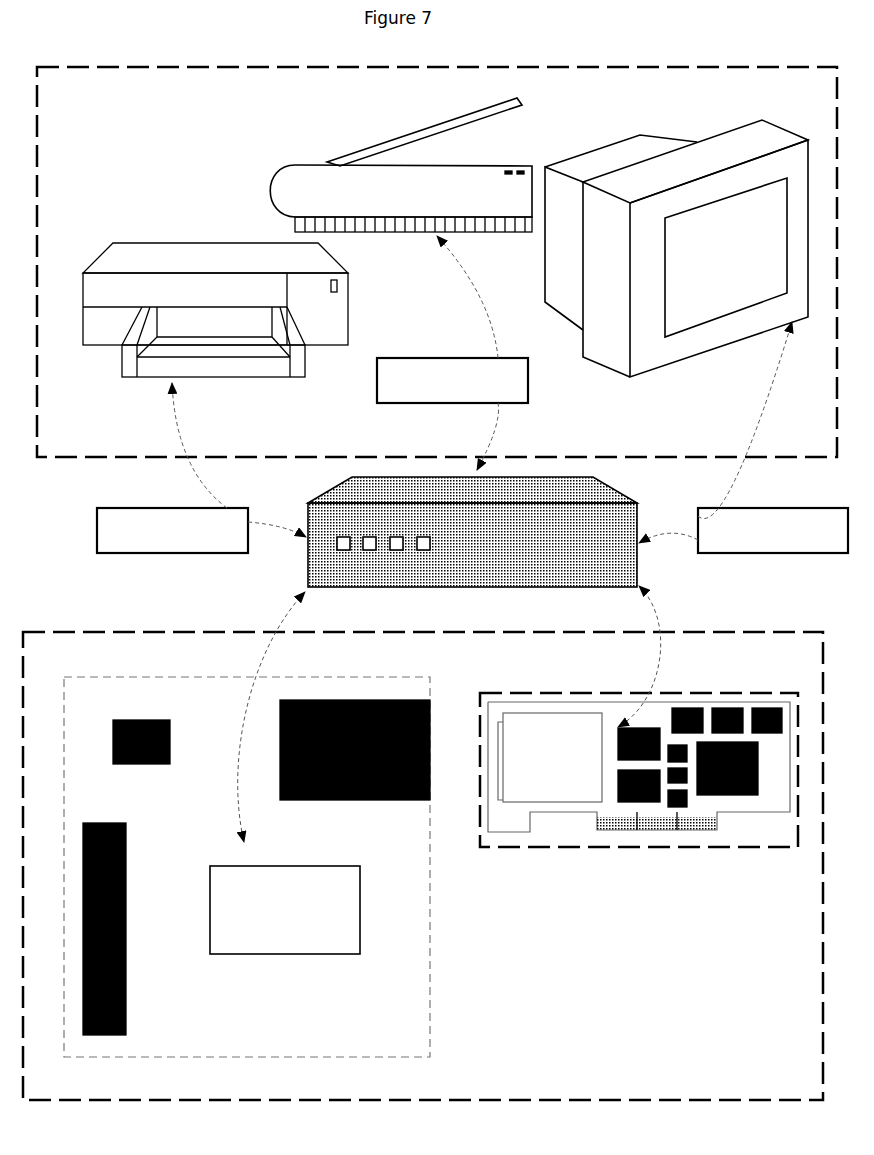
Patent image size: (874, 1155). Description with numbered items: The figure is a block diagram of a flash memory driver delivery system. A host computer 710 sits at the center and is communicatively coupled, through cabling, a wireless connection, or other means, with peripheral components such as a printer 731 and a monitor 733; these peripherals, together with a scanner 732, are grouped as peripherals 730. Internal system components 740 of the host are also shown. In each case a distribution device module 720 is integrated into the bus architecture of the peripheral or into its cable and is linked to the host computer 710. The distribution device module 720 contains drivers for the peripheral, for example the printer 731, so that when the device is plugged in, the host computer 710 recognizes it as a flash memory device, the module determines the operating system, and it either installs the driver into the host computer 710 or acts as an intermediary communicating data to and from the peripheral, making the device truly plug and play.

The host computer 710 is at (472, 532).
The distribution device module 720 is at (472, 595).
The peripherals 730 is at (437, 262).
The printer 731 is at (215, 327).
The scanner 732 is at (401, 182).
The monitor 733 is at (676, 265).
The internal system components 740 is at (423, 866).